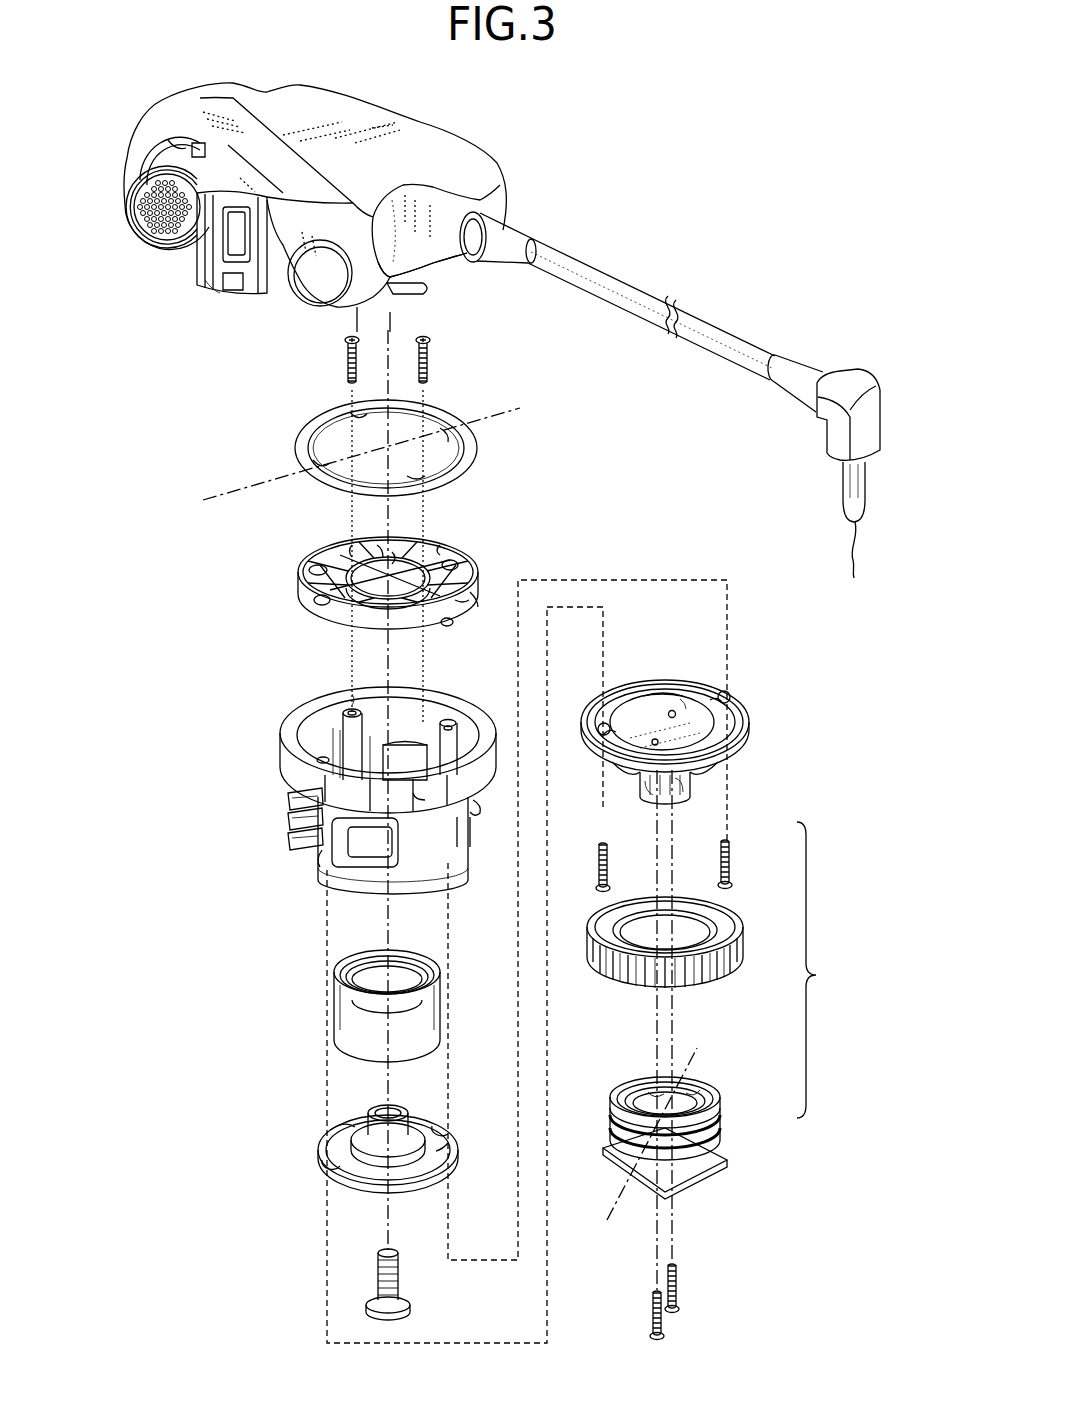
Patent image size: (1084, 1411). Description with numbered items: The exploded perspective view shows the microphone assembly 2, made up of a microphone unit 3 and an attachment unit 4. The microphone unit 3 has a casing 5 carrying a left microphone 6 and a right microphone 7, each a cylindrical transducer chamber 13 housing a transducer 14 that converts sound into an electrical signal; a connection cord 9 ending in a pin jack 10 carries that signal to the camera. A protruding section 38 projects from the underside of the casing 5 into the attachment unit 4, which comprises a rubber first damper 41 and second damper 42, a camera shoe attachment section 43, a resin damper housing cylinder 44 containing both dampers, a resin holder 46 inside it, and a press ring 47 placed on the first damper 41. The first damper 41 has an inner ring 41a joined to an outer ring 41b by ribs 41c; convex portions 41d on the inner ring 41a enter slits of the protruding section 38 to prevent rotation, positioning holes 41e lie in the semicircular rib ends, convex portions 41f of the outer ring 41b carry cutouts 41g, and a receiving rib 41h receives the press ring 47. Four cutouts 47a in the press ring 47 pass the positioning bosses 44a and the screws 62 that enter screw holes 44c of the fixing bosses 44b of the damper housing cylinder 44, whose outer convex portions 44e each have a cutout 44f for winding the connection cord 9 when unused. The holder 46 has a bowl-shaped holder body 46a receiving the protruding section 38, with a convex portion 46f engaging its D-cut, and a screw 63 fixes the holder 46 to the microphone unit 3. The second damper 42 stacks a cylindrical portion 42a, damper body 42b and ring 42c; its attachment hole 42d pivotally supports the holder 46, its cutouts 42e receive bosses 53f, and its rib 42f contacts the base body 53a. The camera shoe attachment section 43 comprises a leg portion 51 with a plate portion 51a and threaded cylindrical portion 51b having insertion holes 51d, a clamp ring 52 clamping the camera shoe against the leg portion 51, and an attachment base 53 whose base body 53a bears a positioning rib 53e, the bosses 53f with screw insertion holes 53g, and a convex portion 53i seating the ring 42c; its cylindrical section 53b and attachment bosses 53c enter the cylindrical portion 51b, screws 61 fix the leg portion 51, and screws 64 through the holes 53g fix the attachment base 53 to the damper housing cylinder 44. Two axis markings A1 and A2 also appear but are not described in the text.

The microphone assembly 2 is at (704, 394).
The microphone unit 3 is at (492, 148).
The attachment unit 4 is at (588, 550).
The casing 5 is at (510, 186).
The left microphone 6 is at (163, 243).
The right microphone 7 is at (221, 293).
The connection cord 9 is at (613, 292).
The pin jack 10 is at (824, 477).
The transducer chamber 13 is at (172, 140).
The transducer 14 is at (196, 143).
The protruding section 38 is at (427, 292).
The first damper 41 is at (368, 587).
The inner ring 41a is at (440, 545).
The outer ring 41b is at (460, 604).
The ribs 41c is at (475, 600).
The convex portions 41d is at (380, 557).
The positioning hole 41e is at (452, 564).
The convex portions 41f is at (318, 566).
The cutout 41g is at (352, 545).
The receiving rib 41h is at (392, 552).
The second damper 42 is at (360, 1149).
The cylindrical portion 42a is at (375, 1105).
The damper body 42b is at (330, 1130).
The ring 42c is at (410, 1175).
The attachment hole 42d is at (392, 1106).
The cutouts 42e is at (440, 1130).
The rib 42f is at (450, 1145).
The camera shoe attachment section 43 is at (820, 970).
The damper housing cylinder 44 is at (342, 790).
The positioning bosses 44a is at (323, 757).
The fixing bosses 44b is at (347, 707).
The screw hole 44c is at (356, 712).
The convex portions 44e is at (320, 868).
The cutout 44f is at (290, 830).
The holder 46 is at (365, 996).
The holder body 46a is at (345, 1010).
The convex portion 46f is at (420, 968).
The press ring 47 is at (370, 419).
The cutouts 47a is at (447, 432).
The leg portion 51 is at (676, 1128).
The plate portion 51a is at (693, 1185).
The cylindrical portion 51b is at (612, 1125).
The insertion holes 51d is at (650, 1093).
The clamp ring 52 is at (738, 938).
The attachment base 53 is at (695, 724).
The base body 53a is at (748, 712).
The cylindrical section 53b is at (683, 795).
The attachment bosses 53c is at (653, 796).
The positioning rib 53e is at (655, 694).
The bosses 53f is at (607, 732).
The screw insertion hole 53g is at (603, 729).
The convex portion 53i is at (680, 699).
The screw 61 is at (680, 1307).
The screw 62 is at (344, 343).
The screw 63 is at (405, 1298).
The screw 64 is at (598, 890).
The axis A1 is at (508, 413).
The axis A2 is at (693, 1058).